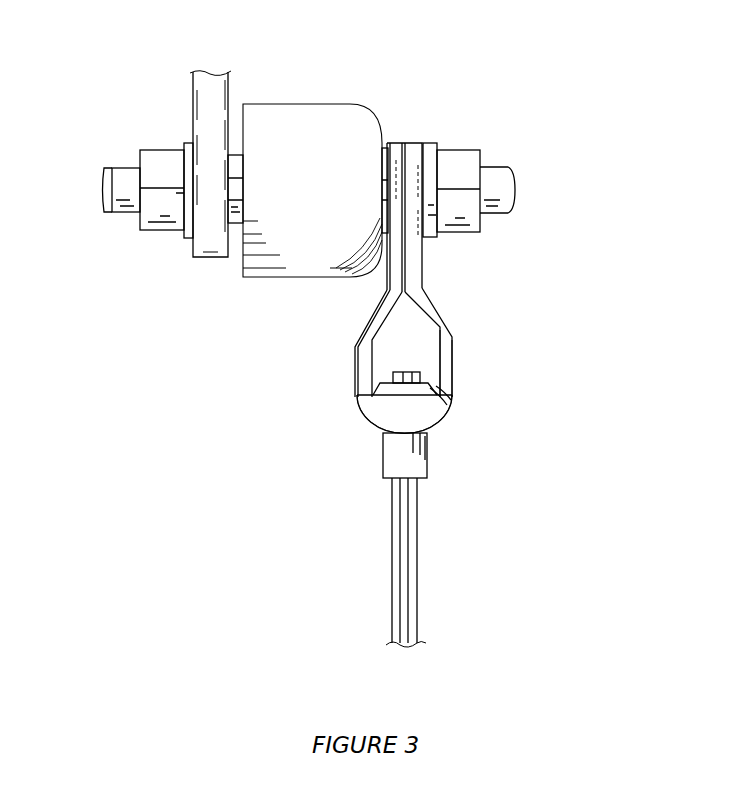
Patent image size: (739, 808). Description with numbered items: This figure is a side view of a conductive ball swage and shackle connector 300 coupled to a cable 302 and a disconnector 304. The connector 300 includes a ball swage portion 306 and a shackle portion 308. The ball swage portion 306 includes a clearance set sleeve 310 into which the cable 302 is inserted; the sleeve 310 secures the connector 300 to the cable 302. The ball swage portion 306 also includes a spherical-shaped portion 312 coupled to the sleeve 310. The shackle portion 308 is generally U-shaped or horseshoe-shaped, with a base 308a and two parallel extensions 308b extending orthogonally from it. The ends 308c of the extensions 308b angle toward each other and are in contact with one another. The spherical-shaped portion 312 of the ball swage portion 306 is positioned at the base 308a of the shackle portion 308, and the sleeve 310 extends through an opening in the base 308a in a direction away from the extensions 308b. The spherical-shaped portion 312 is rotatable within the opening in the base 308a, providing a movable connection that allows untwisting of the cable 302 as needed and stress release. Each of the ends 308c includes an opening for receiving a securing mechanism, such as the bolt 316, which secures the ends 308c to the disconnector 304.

The ball swage and shackle connector 300 is at (362, 425).
The cable 302 is at (418, 555).
The disconnector 304 is at (303, 123).
The ball swage portion 306 is at (429, 446).
The shackle portion 308 is at (455, 377).
The base 308a is at (440, 417).
The extensions 308b is at (455, 352).
The ends 308c is at (412, 145).
The clearance set sleeve 310 is at (425, 462).
The spherical-shaped portion 312 is at (382, 385).
The bolt 316 is at (490, 165).